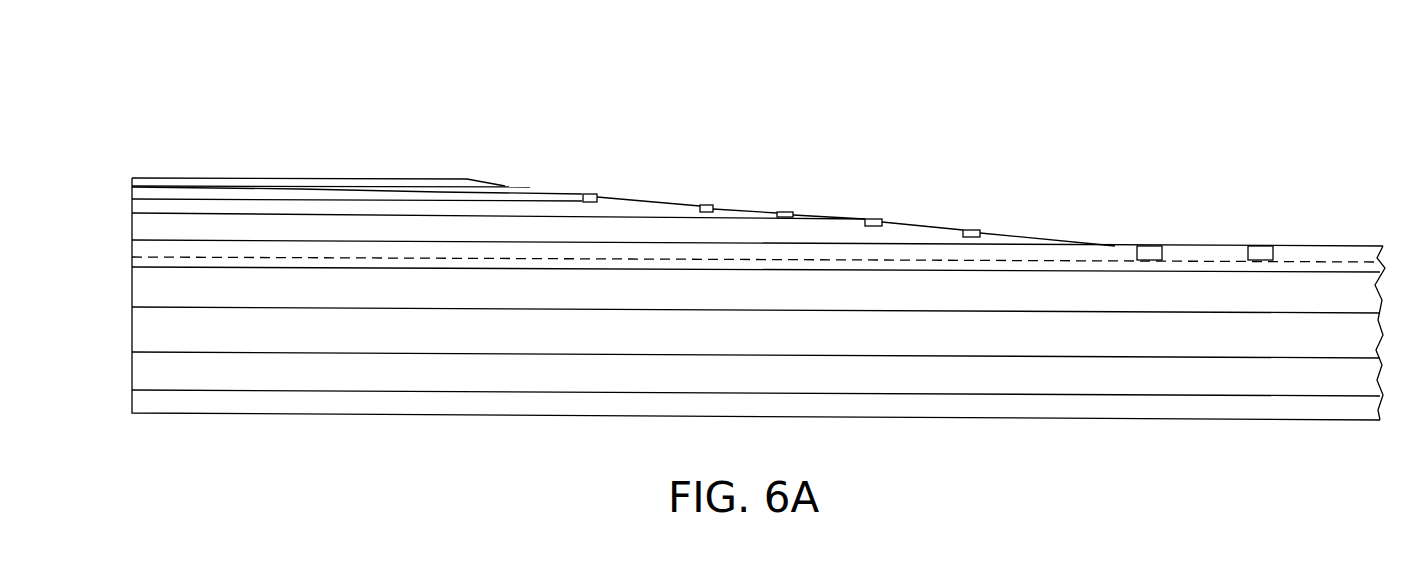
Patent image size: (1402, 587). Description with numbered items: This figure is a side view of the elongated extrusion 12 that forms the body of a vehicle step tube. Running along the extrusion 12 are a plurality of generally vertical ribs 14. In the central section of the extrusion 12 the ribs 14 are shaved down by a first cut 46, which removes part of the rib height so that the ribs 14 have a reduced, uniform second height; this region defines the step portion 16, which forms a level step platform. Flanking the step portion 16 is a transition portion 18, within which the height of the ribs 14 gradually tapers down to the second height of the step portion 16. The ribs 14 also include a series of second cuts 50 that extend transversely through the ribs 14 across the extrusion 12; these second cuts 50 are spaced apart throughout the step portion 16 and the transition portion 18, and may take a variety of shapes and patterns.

The extrusion 12 is at (160, 331).
The ribs 14 is at (150, 220).
The step portion 16 is at (1218, 246).
The transition portion 18 is at (823, 215).
The first cut 46 is at (1112, 245).
The second cuts 50 is at (705, 202).